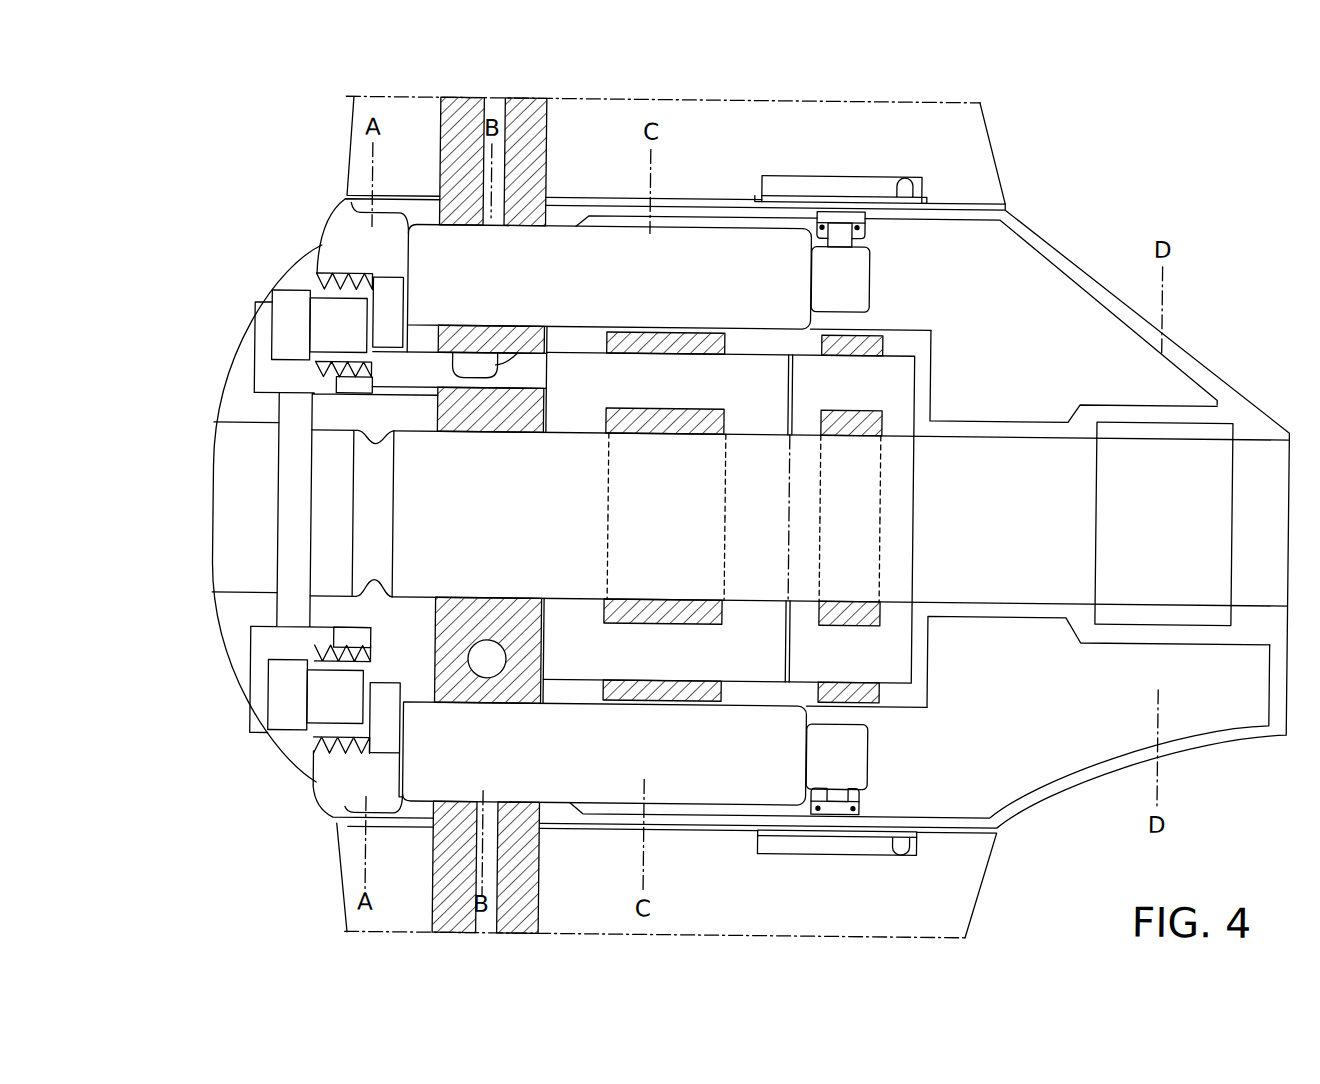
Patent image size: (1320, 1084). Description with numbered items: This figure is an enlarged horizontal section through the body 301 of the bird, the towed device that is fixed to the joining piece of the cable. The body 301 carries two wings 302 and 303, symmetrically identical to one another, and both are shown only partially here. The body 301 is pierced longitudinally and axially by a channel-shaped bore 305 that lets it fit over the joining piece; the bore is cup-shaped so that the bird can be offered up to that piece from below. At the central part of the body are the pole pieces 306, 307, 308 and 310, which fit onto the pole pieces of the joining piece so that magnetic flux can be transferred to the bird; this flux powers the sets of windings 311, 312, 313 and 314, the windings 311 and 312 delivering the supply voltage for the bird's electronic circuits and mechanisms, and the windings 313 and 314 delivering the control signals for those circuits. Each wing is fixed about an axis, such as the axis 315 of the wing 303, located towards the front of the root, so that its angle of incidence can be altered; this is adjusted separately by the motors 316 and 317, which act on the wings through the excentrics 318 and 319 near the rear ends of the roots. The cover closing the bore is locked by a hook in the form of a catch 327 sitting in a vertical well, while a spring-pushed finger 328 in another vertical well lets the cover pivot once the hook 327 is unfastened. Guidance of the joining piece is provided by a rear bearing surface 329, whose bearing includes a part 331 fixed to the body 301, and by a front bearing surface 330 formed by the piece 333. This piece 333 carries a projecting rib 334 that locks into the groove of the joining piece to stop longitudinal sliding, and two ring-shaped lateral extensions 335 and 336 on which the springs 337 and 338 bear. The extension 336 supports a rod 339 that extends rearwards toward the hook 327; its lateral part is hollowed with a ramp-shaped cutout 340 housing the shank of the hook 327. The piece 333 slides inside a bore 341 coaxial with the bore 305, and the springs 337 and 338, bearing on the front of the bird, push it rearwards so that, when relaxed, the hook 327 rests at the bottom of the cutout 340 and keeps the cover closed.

The body 301 is at (1042, 276).
The wing 302 is at (974, 177).
The wing 303 is at (959, 904).
The bore 305 is at (203, 512).
The pole piece 306 is at (752, 419).
The pole piece 307 is at (807, 417).
The pole piece 308 is at (759, 612).
The pole piece 310 is at (804, 614).
The set of windings 311 is at (632, 691).
The set of windings 312 is at (638, 338).
The set of windings 313 is at (867, 695).
The set of windings 314 is at (860, 335).
The axis 315 is at (516, 822).
The motor 316 is at (855, 761).
The motor 317 is at (849, 270).
The excentric 318 is at (903, 835).
The excentric 319 is at (907, 201).
The hook (catch) 327 is at (471, 365).
The finger 328 is at (514, 660).
The rear bearing surface 329 is at (1206, 447).
The front bearing surface 330 is at (332, 437).
The bearing part 331 is at (1122, 426).
The front bearing piece 333 is at (412, 423).
The projecting rib 334 is at (363, 530).
The lateral extension 335 is at (389, 740).
The lateral extension 336 is at (385, 296).
The spring 337 is at (335, 747).
The spring 338 is at (330, 277).
The rod 339 is at (546, 372).
The ramp-shaped cutout 340 is at (496, 355).
The bore 341 is at (294, 596).